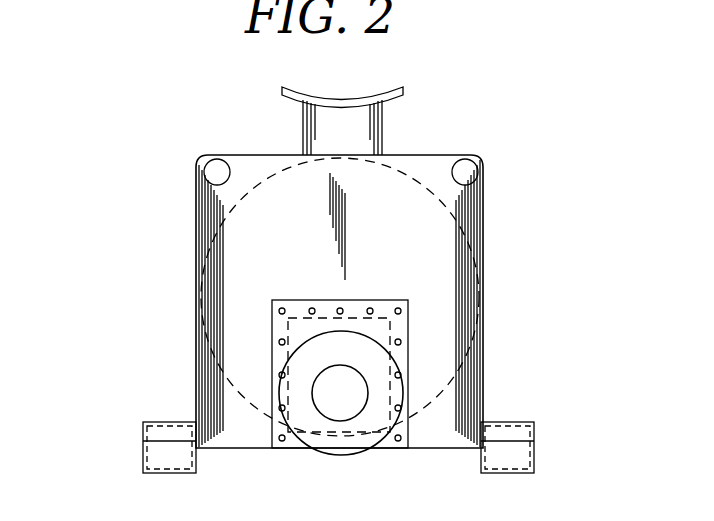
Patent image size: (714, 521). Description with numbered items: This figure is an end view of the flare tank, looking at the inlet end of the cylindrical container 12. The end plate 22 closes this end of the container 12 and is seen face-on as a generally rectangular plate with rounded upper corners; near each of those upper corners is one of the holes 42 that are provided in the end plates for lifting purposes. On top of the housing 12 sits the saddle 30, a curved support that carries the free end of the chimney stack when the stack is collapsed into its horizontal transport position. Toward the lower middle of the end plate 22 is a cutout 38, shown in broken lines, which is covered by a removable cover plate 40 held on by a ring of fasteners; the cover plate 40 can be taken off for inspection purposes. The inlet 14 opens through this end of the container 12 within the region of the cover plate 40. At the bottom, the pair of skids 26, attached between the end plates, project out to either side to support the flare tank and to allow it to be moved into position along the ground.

The cylindrical container 12 is at (220, 236).
The inlet 14 is at (343, 411).
The end plate 22 is at (470, 205).
The skids 26 is at (143, 458).
The saddle 30 is at (298, 88).
The cutout 38 is at (297, 337).
The removable cover plate 40 is at (384, 332).
The holes 42 is at (206, 166).